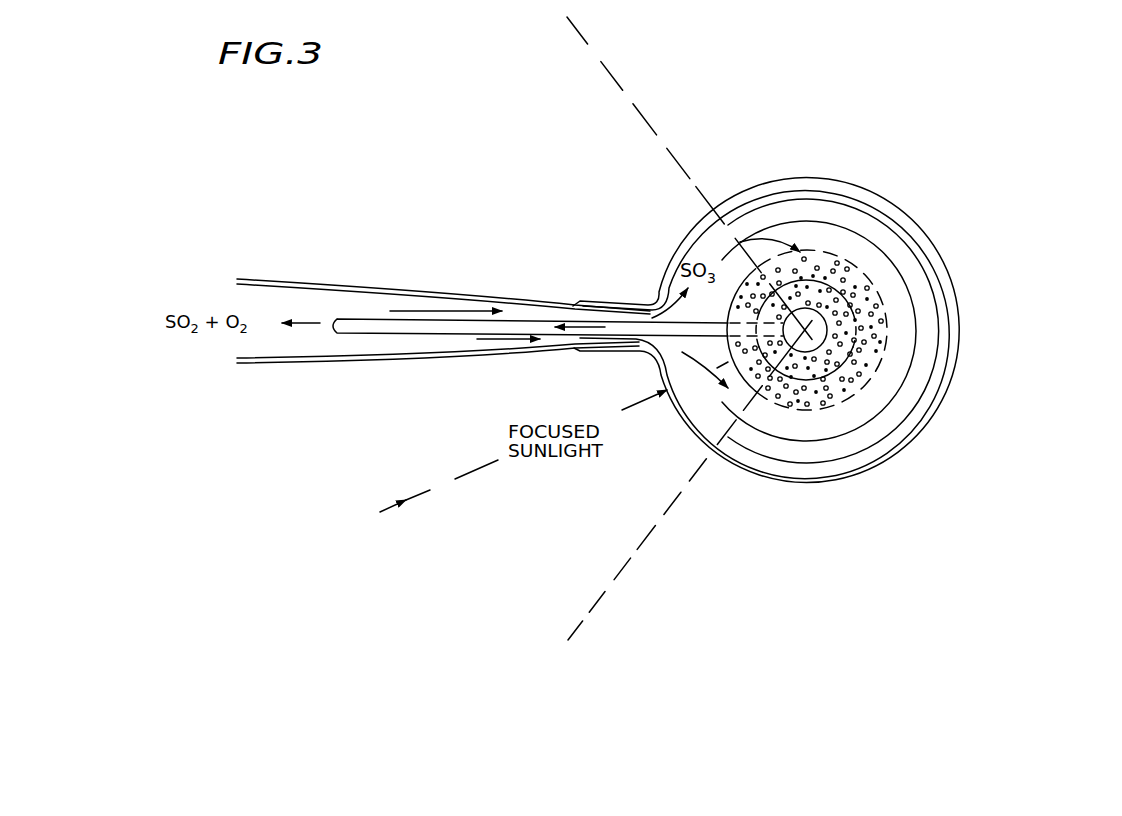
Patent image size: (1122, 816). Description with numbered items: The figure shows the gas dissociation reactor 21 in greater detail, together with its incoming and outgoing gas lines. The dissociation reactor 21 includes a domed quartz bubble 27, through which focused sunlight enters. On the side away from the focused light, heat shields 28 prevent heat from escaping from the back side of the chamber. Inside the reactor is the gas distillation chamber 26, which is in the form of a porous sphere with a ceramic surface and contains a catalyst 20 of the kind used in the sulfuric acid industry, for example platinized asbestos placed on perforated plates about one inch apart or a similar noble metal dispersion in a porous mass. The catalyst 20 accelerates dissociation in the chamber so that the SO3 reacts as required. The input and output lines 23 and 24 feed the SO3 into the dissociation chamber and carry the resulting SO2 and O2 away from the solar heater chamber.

The catalyst 20 is at (853, 348).
The dissociation reactor 21 is at (817, 147).
The input line 23 is at (436, 362).
The output line 24 is at (412, 320).
The gas distillation chamber 26 is at (800, 484).
The domed quartz bubble 27 is at (870, 470).
The heat shields 28 is at (922, 290).